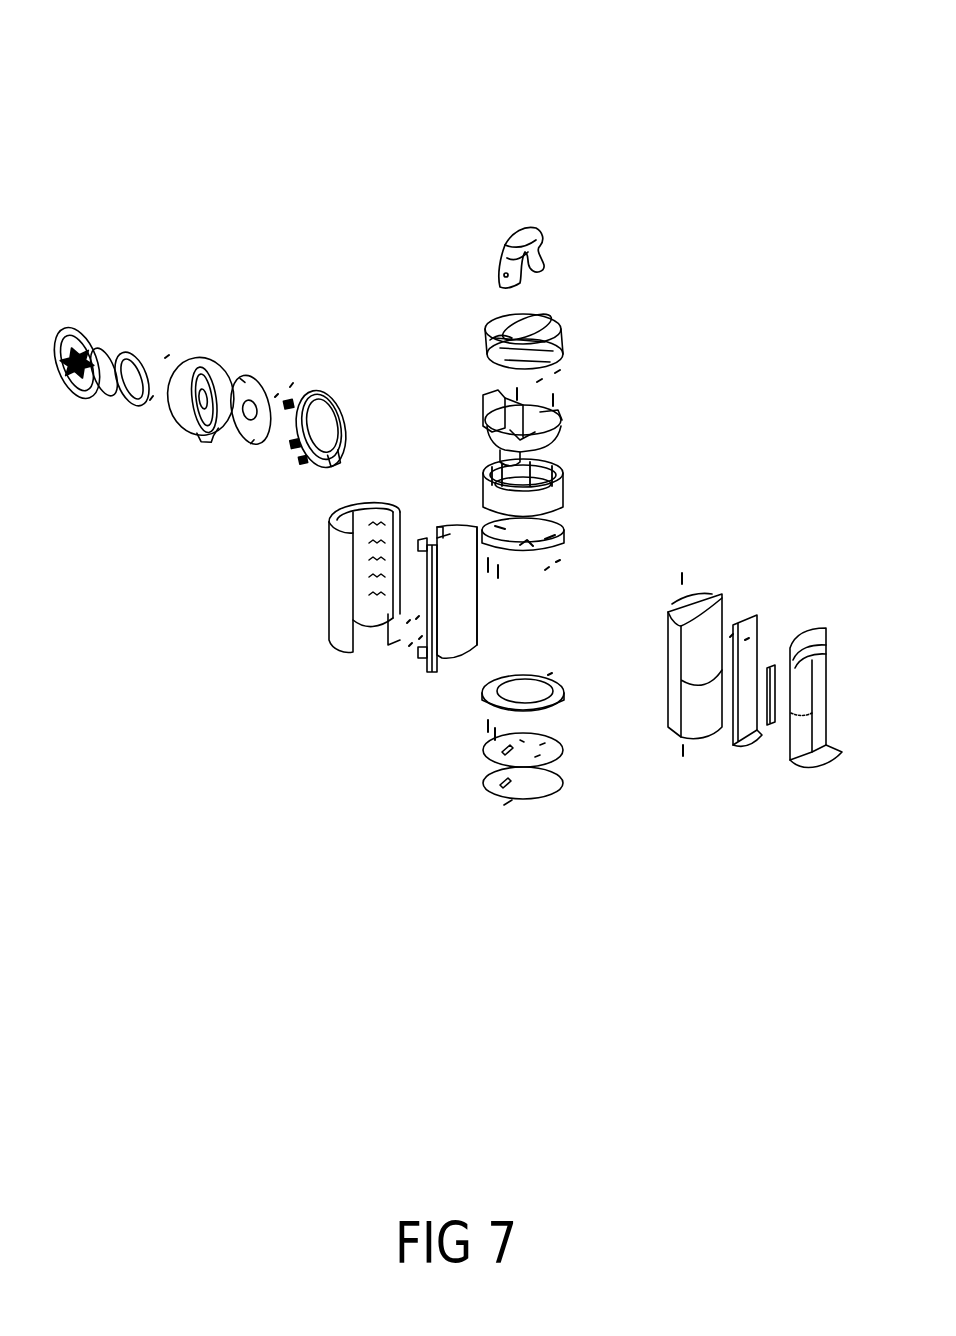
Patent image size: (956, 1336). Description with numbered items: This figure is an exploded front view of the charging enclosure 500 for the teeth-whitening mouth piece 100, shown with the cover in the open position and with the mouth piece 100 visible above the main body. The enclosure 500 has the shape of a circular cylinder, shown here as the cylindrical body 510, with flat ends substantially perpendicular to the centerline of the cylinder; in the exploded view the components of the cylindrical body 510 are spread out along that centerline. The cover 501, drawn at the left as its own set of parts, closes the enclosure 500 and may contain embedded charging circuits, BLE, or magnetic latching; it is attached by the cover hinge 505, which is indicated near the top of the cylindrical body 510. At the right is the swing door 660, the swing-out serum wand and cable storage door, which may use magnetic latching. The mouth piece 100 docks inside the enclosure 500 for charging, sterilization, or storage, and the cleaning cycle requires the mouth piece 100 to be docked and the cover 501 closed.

The enclosure 500 is at (244, 78).
The mouth piece 100 is at (507, 242).
The cover hinge 505 is at (508, 408).
The cover 501 is at (337, 482).
The cylindrical body 510 is at (592, 837).
The swing door 660 is at (827, 787).